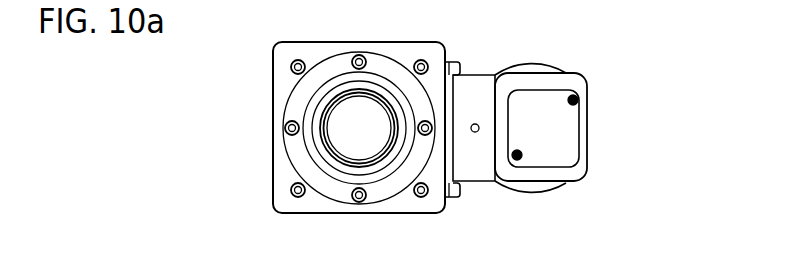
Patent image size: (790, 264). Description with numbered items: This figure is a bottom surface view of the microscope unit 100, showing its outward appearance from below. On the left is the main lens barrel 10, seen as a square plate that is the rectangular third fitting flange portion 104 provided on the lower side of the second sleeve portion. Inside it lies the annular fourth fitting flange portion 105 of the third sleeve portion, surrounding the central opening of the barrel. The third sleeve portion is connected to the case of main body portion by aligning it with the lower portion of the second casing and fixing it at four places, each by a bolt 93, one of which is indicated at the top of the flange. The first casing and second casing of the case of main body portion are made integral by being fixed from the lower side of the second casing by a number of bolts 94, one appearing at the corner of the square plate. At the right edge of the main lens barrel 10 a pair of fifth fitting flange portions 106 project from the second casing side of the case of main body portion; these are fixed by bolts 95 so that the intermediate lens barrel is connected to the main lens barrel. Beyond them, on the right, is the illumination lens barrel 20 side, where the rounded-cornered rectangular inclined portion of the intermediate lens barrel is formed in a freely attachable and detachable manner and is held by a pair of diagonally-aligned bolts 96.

The main lens barrel 10 is at (306, 109).
The illumination lens barrel 20 is at (573, 98).
The bolt 93 is at (360, 54).
The bolt 94 is at (290, 66).
The bolt 95 is at (459, 69).
The bolt 96 is at (605, 92).
The microscope unit 100 is at (573, 98).
The third fitting flange portion 104 is at (274, 182).
The fourth fitting flange portion 105 is at (296, 111).
The fifth fitting flange portion 106 is at (447, 61).